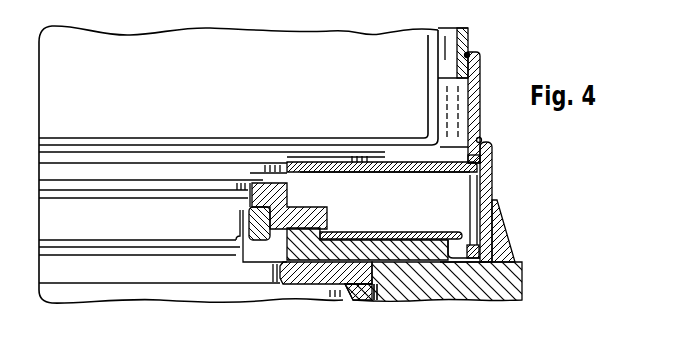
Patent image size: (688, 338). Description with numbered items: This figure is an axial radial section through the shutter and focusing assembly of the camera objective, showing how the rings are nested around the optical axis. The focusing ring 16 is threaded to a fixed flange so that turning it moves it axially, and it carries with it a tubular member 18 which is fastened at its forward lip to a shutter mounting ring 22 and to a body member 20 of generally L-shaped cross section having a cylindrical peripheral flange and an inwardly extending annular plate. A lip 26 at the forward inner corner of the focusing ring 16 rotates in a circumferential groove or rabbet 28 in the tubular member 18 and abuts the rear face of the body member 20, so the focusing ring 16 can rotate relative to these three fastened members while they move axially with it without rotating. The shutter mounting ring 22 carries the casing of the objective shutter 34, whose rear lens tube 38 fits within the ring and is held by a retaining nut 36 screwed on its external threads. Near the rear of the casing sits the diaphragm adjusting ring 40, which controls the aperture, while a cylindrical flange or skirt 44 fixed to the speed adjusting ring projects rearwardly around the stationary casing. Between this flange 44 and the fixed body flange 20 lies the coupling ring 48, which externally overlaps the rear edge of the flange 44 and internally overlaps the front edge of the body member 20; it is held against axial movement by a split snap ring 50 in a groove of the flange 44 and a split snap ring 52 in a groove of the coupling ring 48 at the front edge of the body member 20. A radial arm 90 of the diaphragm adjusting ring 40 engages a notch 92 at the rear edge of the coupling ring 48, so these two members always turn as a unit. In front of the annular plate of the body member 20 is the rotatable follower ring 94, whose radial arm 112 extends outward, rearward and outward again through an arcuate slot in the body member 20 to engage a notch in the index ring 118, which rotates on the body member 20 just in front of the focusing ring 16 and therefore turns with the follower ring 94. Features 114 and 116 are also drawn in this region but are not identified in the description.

The focusing ring 16 is at (515, 287).
The tubular member 18 is at (357, 295).
The body member 20 is at (491, 169).
The shutter mounting ring 22 is at (287, 189).
The lip 26 is at (375, 284).
The circumferential groove or rabbet 28 is at (374, 273).
The objective shutter casing 34 is at (435, 108).
The retaining nut 36 is at (262, 243).
The rear lens tube 38 is at (203, 237).
The diaphragm adjusting ring 40 is at (328, 173).
The cylindrical flange or skirt 44 is at (467, 31).
The coupling ring 48 is at (476, 93).
The split snap ring 50 is at (469, 55).
The split snap ring 52 is at (481, 139).
The radial arm 90 is at (422, 173).
The notch 92 is at (468, 159).
The follower ring 94 is at (352, 236).
The radial arm 112 is at (472, 241).
The end of support strip 114 is at (430, 236).
The joint 116 is at (487, 262).
The index ring 118 is at (506, 230).